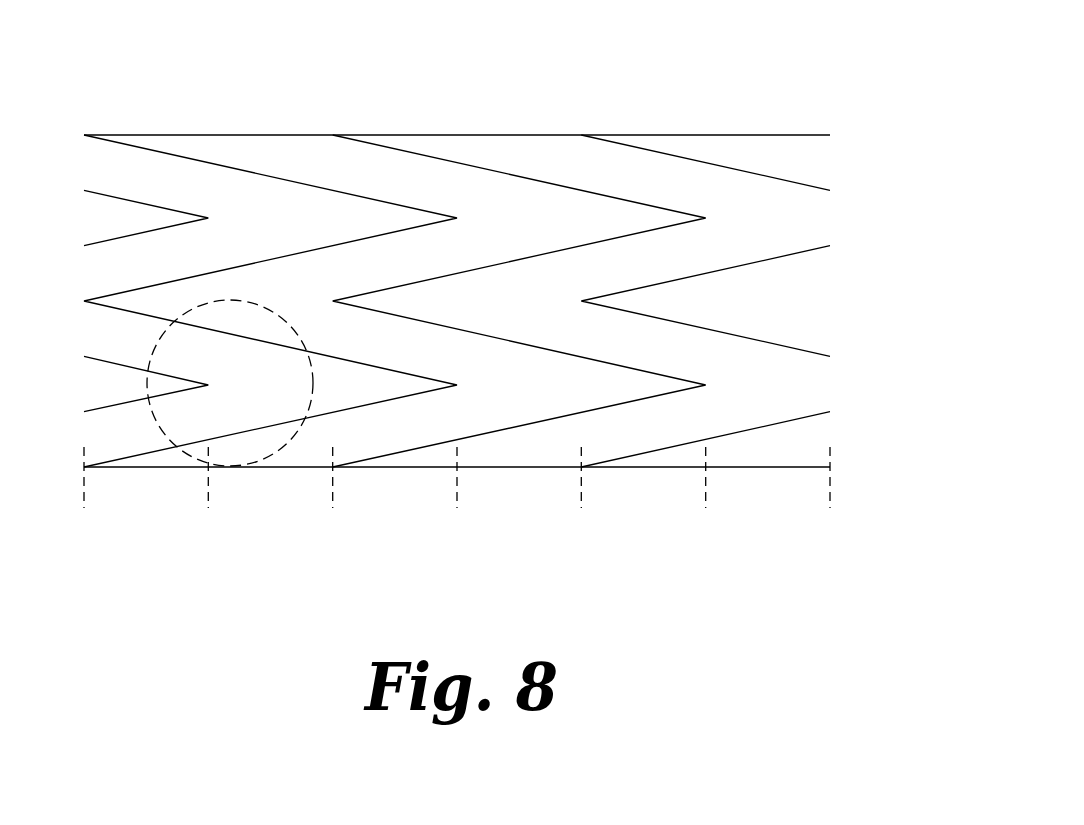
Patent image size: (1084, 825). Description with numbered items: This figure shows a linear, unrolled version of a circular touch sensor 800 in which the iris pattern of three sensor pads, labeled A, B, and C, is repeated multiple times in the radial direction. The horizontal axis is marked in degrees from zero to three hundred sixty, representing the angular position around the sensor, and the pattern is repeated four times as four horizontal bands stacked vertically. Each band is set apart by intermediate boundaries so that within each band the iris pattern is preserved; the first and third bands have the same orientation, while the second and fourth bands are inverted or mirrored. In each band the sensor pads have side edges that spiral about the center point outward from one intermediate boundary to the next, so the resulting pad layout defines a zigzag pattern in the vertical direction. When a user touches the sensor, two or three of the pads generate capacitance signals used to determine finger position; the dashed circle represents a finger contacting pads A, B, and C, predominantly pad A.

The circular touch sensor 800 is at (670, 86).